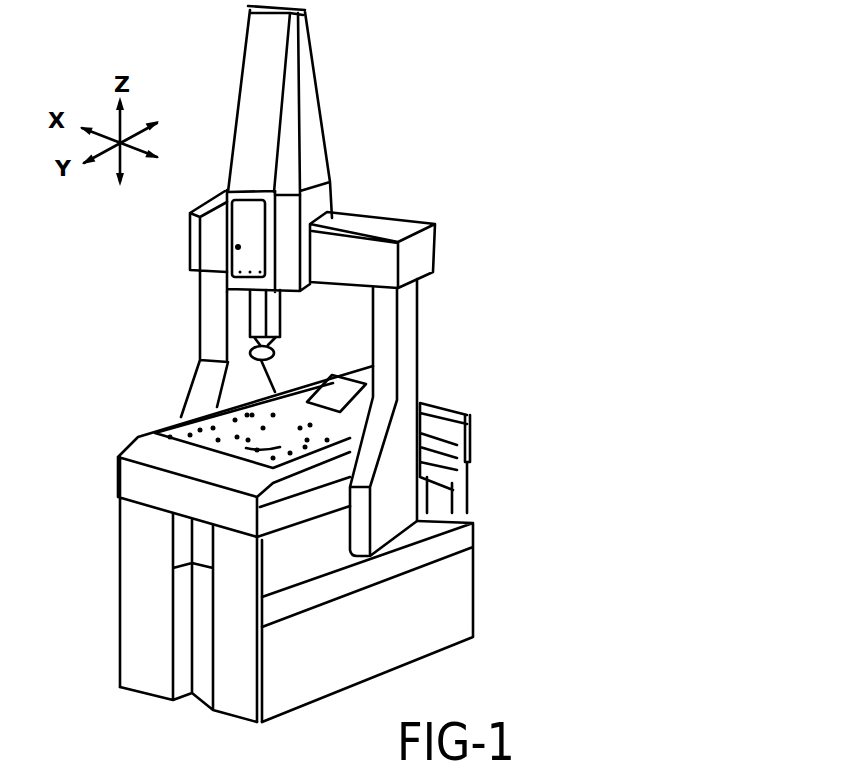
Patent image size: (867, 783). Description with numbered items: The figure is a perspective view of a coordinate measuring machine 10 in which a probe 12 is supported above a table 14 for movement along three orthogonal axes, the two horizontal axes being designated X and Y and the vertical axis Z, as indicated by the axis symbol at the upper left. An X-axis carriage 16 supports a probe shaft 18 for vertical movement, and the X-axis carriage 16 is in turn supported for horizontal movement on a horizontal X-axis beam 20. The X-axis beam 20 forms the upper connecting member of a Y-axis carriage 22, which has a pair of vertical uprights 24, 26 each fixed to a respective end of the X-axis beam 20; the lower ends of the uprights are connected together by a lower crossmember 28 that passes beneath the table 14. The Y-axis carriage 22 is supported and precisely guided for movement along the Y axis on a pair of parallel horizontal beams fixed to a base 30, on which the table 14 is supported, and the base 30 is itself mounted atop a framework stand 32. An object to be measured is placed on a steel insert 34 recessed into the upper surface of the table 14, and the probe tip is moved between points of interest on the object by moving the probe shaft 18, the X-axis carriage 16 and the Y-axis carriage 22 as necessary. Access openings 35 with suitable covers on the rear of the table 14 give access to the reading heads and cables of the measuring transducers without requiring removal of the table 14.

The coordinate measuring machine 10 is at (527, 237).
The probe 12 is at (262, 369).
The table 14 is at (160, 430).
The X-axis carriage 16 is at (327, 165).
The probe shaft 18 is at (281, 321).
The X-axis beam 20 is at (372, 229).
The Y-axis carriage 22 is at (427, 398).
The vertical upright 24 is at (202, 318).
The vertical upright 26 is at (418, 330).
The lower crossmember 28 is at (333, 485).
The base 30 is at (120, 561).
The framework stand 32 is at (120, 660).
The steel insert 34 is at (262, 439).
The access openings 35 is at (365, 418).